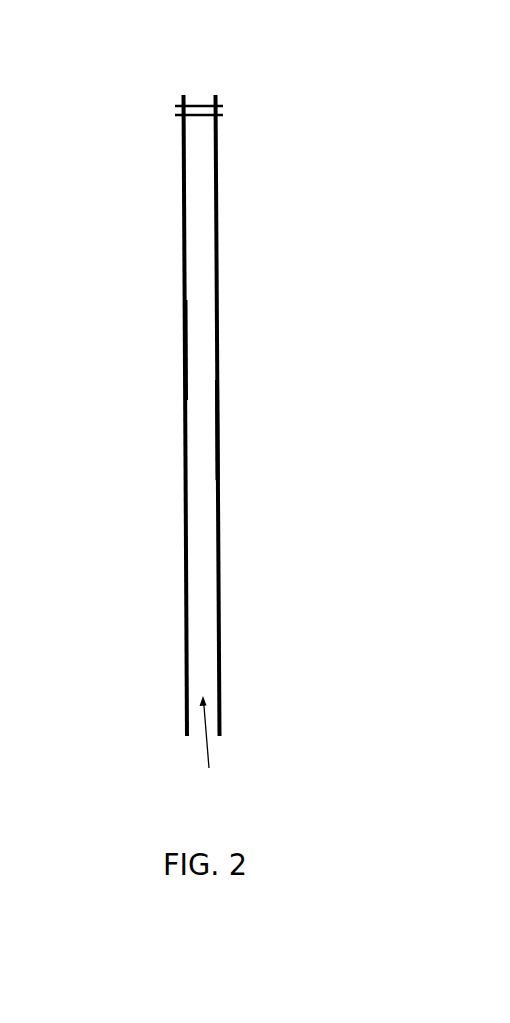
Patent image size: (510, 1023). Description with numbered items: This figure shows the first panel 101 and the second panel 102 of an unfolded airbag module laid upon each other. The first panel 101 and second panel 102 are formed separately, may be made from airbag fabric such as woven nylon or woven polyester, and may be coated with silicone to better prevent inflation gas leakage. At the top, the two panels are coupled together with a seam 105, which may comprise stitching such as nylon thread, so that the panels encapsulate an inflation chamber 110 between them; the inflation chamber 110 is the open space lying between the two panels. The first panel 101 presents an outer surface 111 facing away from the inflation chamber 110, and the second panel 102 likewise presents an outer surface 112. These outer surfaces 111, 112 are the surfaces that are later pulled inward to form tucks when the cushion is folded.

The first panel 101 is at (184, 220).
The second panel 102 is at (218, 293).
The seam 105 is at (198, 106).
The inflation chamber 110 is at (211, 745).
The outer surface of first panel 111 is at (185, 344).
The outer surface of second panel 112 is at (218, 431).